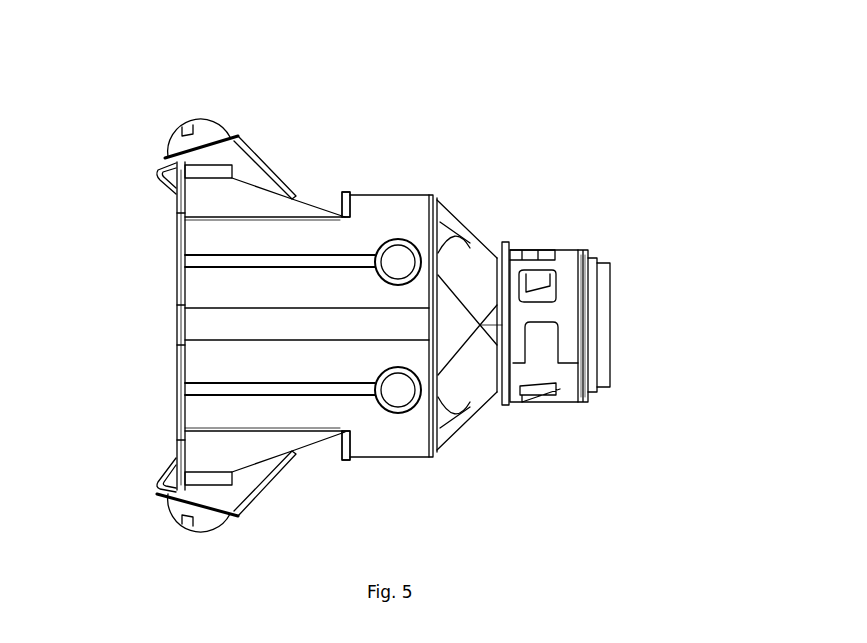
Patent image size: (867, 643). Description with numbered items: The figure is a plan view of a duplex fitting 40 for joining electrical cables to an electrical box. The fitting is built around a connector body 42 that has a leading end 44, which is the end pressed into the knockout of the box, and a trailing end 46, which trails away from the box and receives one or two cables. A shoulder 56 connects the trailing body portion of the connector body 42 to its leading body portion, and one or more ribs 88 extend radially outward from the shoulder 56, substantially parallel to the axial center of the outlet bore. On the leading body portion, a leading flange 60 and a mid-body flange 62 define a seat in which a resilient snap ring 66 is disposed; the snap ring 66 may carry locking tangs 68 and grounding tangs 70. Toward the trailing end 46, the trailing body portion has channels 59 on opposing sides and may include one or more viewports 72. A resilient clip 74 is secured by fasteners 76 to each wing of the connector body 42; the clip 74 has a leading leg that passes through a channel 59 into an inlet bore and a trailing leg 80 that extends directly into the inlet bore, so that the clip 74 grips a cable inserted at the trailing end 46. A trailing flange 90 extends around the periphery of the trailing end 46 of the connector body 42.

The duplex fitting 40 is at (603, 173).
The connector body 42 is at (322, 369).
The leading end 44 is at (612, 327).
The trailing end 46 is at (177, 327).
The shoulder 56 is at (477, 252).
The channel 59 is at (332, 204).
The leading flange 60 is at (587, 392).
The mid-body flange 62 is at (507, 408).
The resilient snap ring 66 is at (565, 258).
The locking tang 68 is at (540, 282).
The grounding tang 70 is at (508, 248).
The viewport 72 is at (400, 390).
The resilient clip 74 is at (237, 138).
The fastener 76 is at (173, 520).
The trailing leg 80 is at (165, 475).
The rib 88 is at (445, 220).
The trailing flange 90 is at (177, 247).